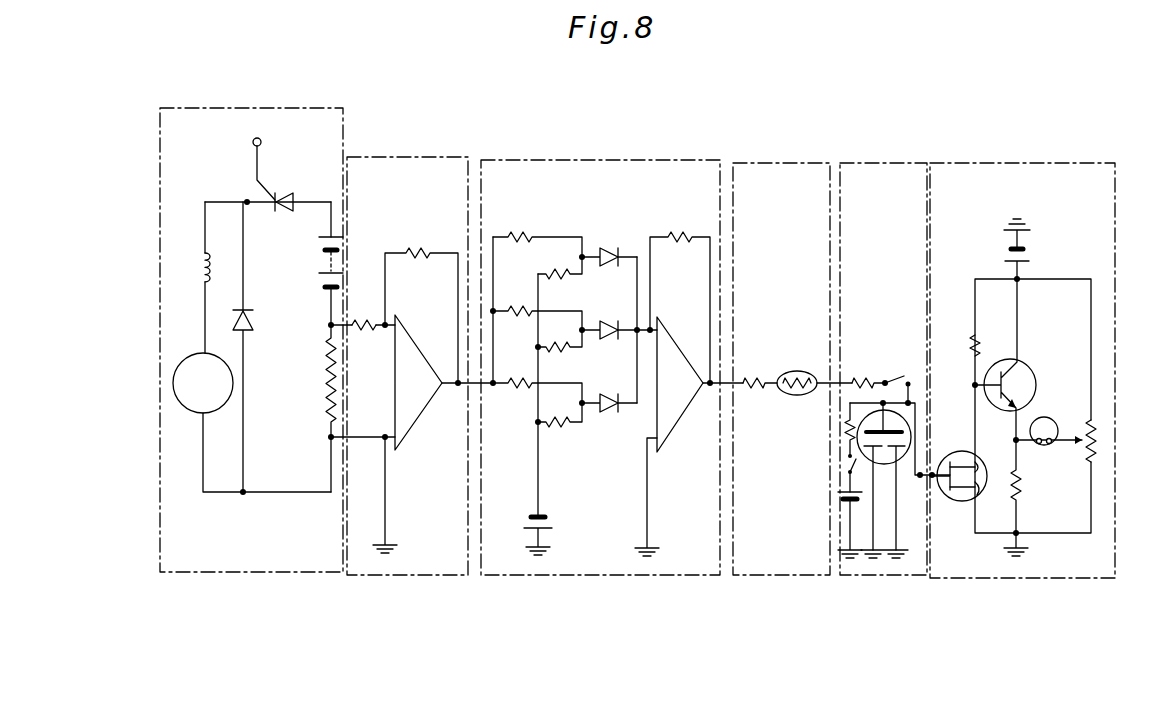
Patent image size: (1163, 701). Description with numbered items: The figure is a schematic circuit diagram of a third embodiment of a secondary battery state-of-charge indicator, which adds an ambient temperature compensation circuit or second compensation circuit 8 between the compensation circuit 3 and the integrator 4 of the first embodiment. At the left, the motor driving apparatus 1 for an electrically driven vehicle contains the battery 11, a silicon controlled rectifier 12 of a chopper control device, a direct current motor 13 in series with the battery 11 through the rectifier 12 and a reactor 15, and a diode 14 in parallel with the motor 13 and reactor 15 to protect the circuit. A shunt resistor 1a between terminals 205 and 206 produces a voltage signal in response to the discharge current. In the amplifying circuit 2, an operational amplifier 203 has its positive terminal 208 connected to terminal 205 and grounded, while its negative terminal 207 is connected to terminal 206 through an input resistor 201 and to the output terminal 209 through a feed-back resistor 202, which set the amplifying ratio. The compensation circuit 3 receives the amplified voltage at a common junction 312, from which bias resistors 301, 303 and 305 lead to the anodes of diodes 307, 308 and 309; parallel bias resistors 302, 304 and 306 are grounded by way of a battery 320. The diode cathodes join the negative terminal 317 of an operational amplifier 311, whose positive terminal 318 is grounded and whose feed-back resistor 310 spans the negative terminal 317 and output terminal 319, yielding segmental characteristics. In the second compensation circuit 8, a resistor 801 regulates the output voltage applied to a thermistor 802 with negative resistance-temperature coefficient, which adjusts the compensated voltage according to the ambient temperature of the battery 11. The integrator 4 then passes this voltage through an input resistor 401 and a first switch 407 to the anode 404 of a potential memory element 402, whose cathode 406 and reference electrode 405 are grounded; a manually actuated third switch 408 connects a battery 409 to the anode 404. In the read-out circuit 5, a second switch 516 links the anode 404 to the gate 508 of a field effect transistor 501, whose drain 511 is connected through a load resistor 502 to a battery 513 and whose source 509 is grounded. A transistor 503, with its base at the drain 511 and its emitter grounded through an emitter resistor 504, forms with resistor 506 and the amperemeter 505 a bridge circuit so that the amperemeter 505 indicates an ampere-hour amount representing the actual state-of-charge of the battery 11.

The motor driving apparatus 1 is at (258, 108).
The shunt resistor 1a is at (322, 370).
The amplifying circuit 2 is at (413, 157).
The compensation circuit 3 is at (601, 160).
The integrator 4 is at (874, 163).
The read-out circuit 5 is at (1020, 163).
The second compensation circuit 8 is at (785, 163).
The secondary battery 11 is at (319, 248).
The silicon controlled rectifier 12 is at (281, 195).
The direct current motor 13 is at (186, 405).
The diode 14 is at (249, 324).
The reactor 15 is at (197, 276).
The input resistor 201 is at (367, 332).
The feed-back resistor 202 is at (418, 253).
The operational amplifier 203 is at (413, 355).
The terminal 205 is at (328, 437).
The terminal 206 is at (328, 325).
The negative terminal 207 is at (387, 321).
The positive terminal 208 is at (385, 436).
The output terminal 209 is at (458, 387).
The bias resistor 301 is at (519, 235).
The bias resistor 302 is at (559, 279).
The bias resistor 303 is at (514, 307).
The bias resistor 304 is at (560, 352).
The bias resistor 305 is at (515, 378).
The bias resistor 306 is at (559, 428).
The diode 307 is at (608, 252).
The diode 308 is at (608, 326).
The diode 309 is at (607, 397).
The feed-back resistor 310 is at (677, 235).
The operational amplifier 311 is at (680, 340).
The common junction 312 is at (493, 388).
The negative terminal 317 is at (653, 326).
The positive terminal 318 is at (645, 438).
The output terminal 319 is at (708, 390).
The battery 320 is at (547, 520).
The input resistor 401 is at (858, 377).
The potential memory element 402 is at (848, 422).
The anode 404 is at (911, 403).
The reference electrode 405 is at (905, 450).
The cathode 406 is at (856, 448).
The first switch 407 is at (897, 378).
The third switch 408 is at (845, 463).
The battery 409 is at (838, 482).
The field effect transistor 501 is at (968, 508).
The load resistor 502 is at (970, 342).
The transistor 503 is at (1022, 372).
The emitter resistor 504 is at (1023, 495).
The amperemeter 505 is at (1051, 419).
The resistor 506 is at (1098, 449).
The gate 508 is at (948, 494).
The source 509 is at (982, 494).
The drain 511 is at (977, 465).
The battery 513 is at (1026, 261).
The second switch 516 is at (922, 472).
The resistor 801 is at (753, 377).
The thermistor 802 is at (796, 371).